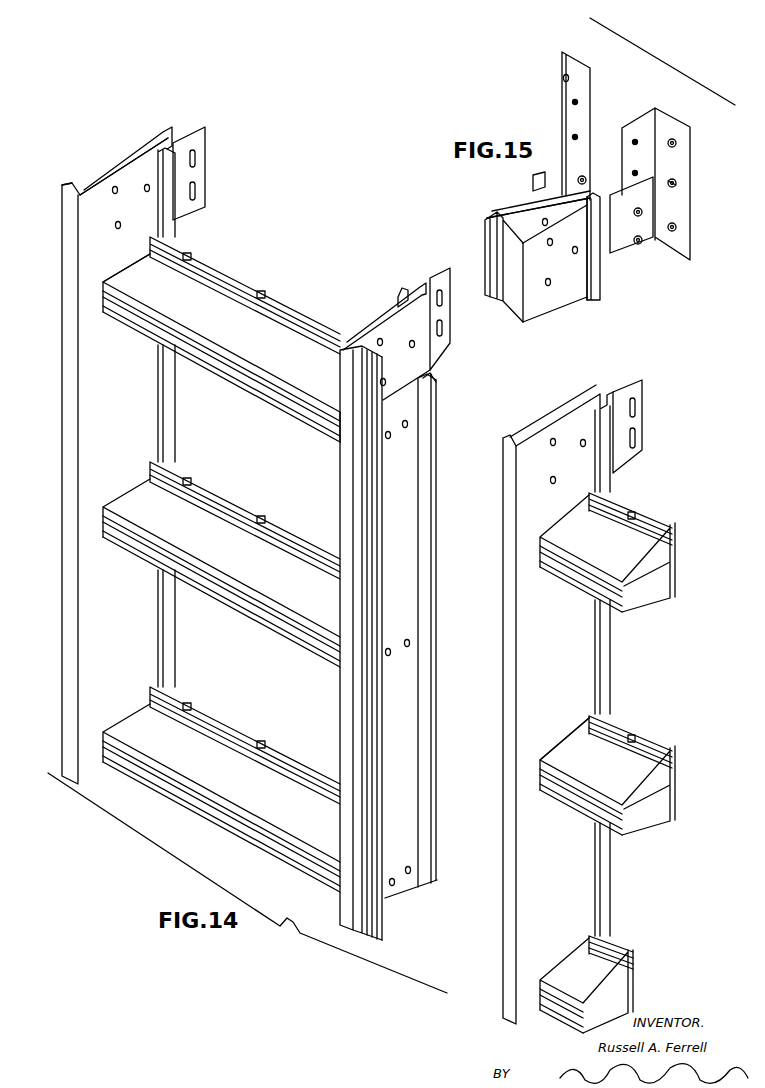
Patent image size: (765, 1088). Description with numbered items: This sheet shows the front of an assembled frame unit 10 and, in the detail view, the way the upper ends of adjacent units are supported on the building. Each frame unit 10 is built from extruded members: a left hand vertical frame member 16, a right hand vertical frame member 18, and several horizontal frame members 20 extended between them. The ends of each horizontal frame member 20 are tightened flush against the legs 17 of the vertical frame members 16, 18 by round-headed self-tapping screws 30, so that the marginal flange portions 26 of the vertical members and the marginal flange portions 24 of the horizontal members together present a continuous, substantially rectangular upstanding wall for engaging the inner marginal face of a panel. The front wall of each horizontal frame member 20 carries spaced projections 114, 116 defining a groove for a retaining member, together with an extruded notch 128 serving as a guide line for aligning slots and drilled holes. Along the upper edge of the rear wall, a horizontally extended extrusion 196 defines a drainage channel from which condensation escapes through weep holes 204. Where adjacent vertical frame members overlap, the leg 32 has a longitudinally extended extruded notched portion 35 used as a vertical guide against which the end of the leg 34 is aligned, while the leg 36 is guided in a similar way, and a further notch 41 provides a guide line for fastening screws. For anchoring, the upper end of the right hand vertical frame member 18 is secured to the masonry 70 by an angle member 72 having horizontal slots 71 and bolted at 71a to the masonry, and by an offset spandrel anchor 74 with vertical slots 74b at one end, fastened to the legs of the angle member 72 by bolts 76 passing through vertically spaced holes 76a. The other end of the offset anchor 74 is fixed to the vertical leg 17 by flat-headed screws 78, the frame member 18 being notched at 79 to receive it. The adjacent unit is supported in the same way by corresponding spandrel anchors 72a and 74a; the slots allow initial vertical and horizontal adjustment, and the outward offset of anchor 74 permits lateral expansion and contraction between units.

In FIG. 14, the frame unit 10 is at (106, 158).
In FIG. 14, the left hand vertical frame member 16 is at (62, 411).
In FIG. 15, the left hand vertical frame member 16 is at (545, 306).
In FIG. 14, the leg of vertical frame member 17 is at (90, 282).
In FIG. 14, the right hand vertical frame member 18 is at (433, 580).
In FIG. 15, the right hand vertical frame member 18 is at (532, 198).
In FIG. 14, the horizontal frame member 20 is at (255, 300).
In FIG. 14, the marginal flange portion of horizontal member 24 is at (220, 265).
In FIG. 14, the marginal flange portion 26 is at (170, 232).
In FIG. 15, the marginal flange portion 26 is at (533, 183).
In FIG. 14, the round-headed self-tapping screws 30 is at (405, 430).
In FIG. 14, the leg 32 is at (378, 490).
In FIG. 15, the leg 32 is at (496, 212).
In FIG. 14, the leg 34 is at (70, 182).
In FIG. 15, the leg 34 is at (538, 217).
In FIG. 14, the extruded notched portion 35 is at (370, 526).
In FIG. 14, the leg 36 is at (436, 462).
In FIG. 14, the notch 41 is at (348, 470).
In FIG. 15, the masonry 70 is at (662, 57).
In FIG. 15, the horizontal slots 71 is at (686, 225).
In FIG. 15, the bolts 71a is at (678, 184).
In FIG. 15, the angle member 72 is at (560, 70).
In FIG. 15, the spandrel anchor 72a is at (688, 140).
In FIG. 14, the offset spandrel anchor 74 is at (420, 285).
In FIG. 15, the offset spandrel anchor 74 is at (556, 164).
In FIG. 14, the spandrel anchor 74a is at (188, 128).
In FIG. 15, the spandrel anchor 74a is at (636, 262).
In FIG. 14, the vertical slots 74b is at (443, 328).
In FIG. 15, the vertical slots 74b is at (601, 275).
In FIG. 15, the bolts 76 is at (586, 178).
In FIG. 15, the holes 76a is at (633, 141).
In FIG. 14, the flat-headed screws 78 is at (124, 220).
In FIG. 15, the flat-headed screws 78 is at (551, 278).
In FIG. 14, the notch 79 is at (436, 380).
In FIG. 14, the projection 114 is at (150, 306).
In FIG. 14, the projection 116 is at (182, 356).
In FIG. 14, the extruded notch 128 is at (200, 392).
In FIG. 14, the extrusion 196 is at (303, 310).
In FIG. 14, the weep holes 204 is at (183, 262).